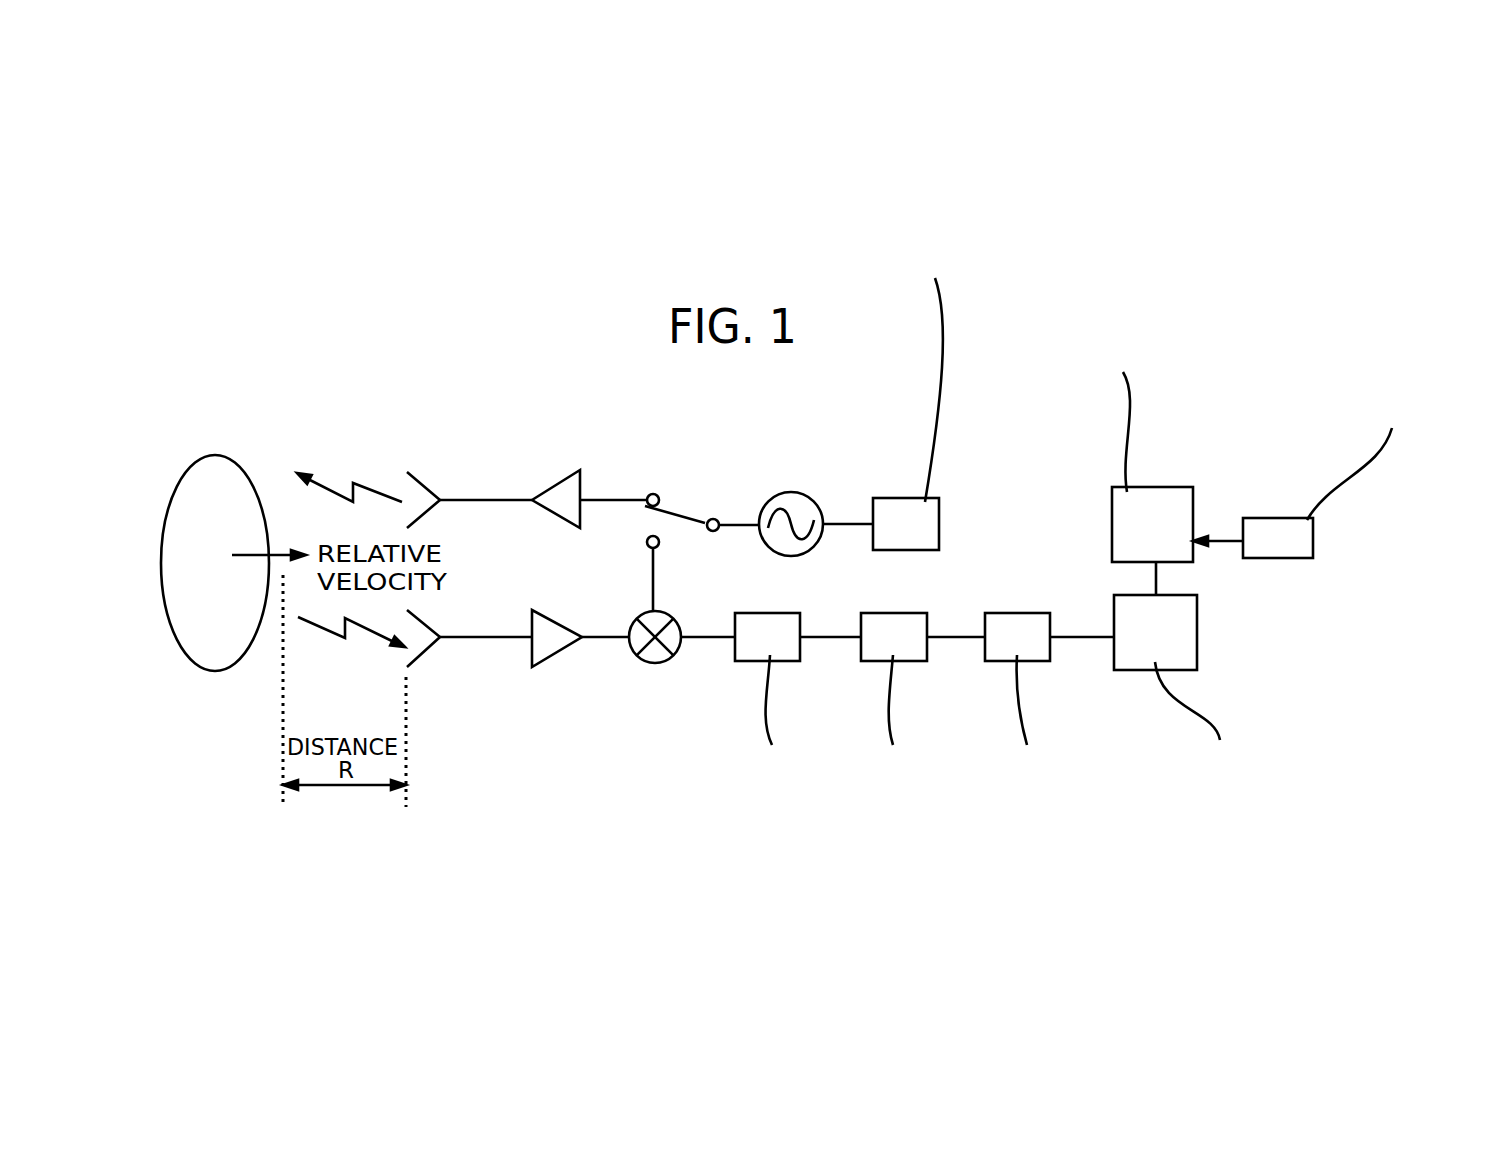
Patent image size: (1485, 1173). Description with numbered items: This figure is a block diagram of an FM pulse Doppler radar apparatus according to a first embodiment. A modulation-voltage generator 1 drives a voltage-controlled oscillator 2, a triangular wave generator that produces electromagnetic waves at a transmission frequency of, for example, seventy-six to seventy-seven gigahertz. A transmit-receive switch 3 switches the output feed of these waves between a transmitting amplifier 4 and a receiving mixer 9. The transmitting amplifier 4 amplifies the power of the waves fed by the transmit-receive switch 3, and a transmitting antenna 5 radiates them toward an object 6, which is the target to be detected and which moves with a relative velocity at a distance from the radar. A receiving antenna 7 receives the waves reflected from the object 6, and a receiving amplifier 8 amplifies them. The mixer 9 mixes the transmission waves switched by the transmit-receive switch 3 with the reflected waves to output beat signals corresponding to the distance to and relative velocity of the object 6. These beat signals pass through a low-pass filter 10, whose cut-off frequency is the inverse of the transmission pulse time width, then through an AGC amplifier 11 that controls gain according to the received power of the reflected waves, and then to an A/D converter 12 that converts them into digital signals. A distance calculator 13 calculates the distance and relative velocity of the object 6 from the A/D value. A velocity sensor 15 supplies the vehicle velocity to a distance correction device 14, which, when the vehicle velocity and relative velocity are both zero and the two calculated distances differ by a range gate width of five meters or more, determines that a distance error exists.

The modulation-voltage generator 1 is at (900, 498).
The voltage-controlled oscillator 2 is at (790, 492).
The transmit-receive switch 3 is at (677, 510).
The transmitting amplifier 4 is at (553, 483).
The transmitting antenna 5 is at (428, 480).
The object 6 is at (215, 672).
The receiving antenna 7 is at (427, 653).
The receiving amplifier 8 is at (557, 653).
The mixer 9 is at (677, 653).
The low-pass filter 10 is at (802, 652).
The AGC amplifier 11 is at (928, 652).
The A/D converter 12 is at (1052, 648).
The distance calculator 13 is at (1198, 648).
The distance correction device 14 is at (1148, 487).
The velocity sensor 15 is at (1279, 518).